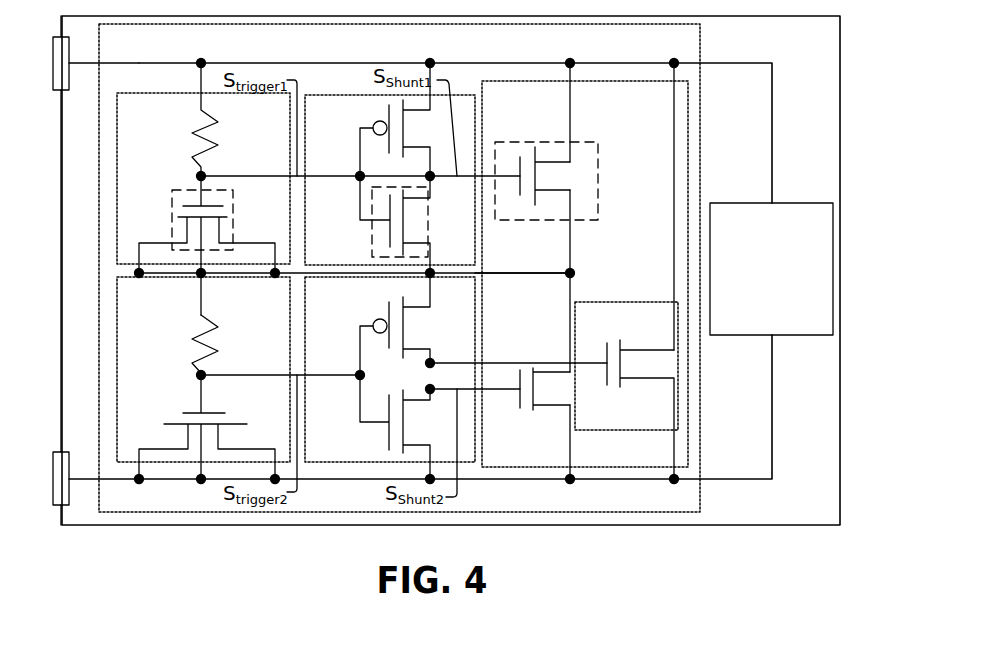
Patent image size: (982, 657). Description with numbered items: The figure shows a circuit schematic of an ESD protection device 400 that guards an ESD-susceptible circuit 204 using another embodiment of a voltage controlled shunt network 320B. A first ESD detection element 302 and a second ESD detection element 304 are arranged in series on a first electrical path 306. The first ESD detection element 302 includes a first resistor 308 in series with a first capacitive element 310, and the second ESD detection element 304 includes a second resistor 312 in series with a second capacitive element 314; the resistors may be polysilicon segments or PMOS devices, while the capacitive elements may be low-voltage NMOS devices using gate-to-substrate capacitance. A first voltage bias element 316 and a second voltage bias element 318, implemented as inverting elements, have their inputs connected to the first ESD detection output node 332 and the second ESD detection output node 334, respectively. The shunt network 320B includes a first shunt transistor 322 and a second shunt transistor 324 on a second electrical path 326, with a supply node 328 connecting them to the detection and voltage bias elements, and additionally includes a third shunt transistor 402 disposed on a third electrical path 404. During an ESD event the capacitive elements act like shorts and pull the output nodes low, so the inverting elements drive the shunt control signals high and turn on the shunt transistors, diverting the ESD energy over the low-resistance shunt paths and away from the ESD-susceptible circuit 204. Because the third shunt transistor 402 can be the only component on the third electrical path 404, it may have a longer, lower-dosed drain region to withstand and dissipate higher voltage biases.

The ESD protection device 400 is at (520, 53).
The first ESD detection element 302 is at (162, 132).
The second ESD detection element 304 is at (162, 282).
The first voltage bias element 316 is at (350, 130).
The second voltage bias element 318 is at (350, 322).
The voltage controlled shunt network 320B is at (648, 136).
The first resistor 308 is at (215, 122).
The second resistor 312 is at (215, 330).
The first capacitive element 310 is at (236, 214).
The second capacitive element 314 is at (229, 408).
The first electrical path 306 is at (212, 302).
The first ESD detection output node 332 is at (221, 176).
The second ESD detection output node 334 is at (221, 375).
The first shunt transistor 322 is at (580, 177).
The second electrical path 326 is at (556, 248).
The supply node 328 is at (488, 275).
The second shunt transistor 324 is at (512, 345).
The third shunt transistor 402 is at (633, 300).
The third electrical path 404 is at (685, 190).
The ESD-susceptible circuit 204 is at (755, 310).